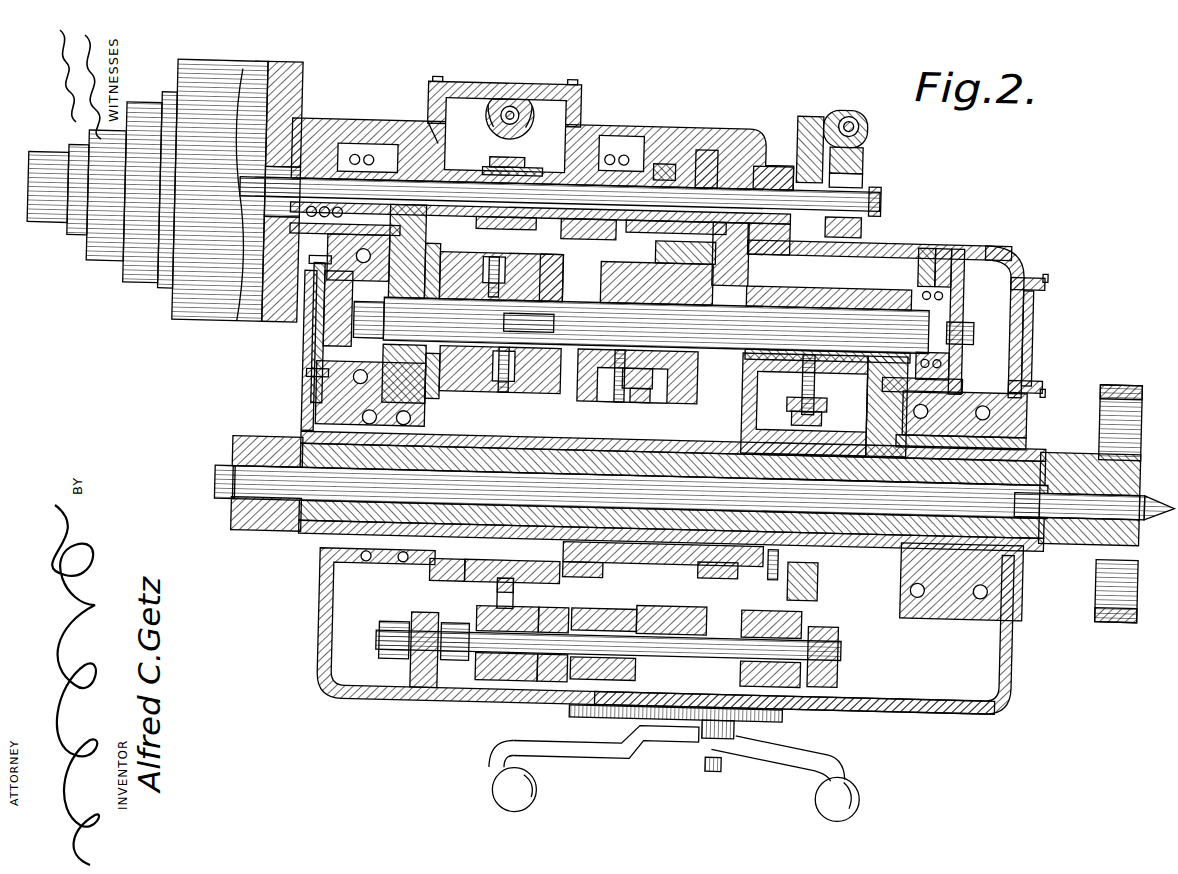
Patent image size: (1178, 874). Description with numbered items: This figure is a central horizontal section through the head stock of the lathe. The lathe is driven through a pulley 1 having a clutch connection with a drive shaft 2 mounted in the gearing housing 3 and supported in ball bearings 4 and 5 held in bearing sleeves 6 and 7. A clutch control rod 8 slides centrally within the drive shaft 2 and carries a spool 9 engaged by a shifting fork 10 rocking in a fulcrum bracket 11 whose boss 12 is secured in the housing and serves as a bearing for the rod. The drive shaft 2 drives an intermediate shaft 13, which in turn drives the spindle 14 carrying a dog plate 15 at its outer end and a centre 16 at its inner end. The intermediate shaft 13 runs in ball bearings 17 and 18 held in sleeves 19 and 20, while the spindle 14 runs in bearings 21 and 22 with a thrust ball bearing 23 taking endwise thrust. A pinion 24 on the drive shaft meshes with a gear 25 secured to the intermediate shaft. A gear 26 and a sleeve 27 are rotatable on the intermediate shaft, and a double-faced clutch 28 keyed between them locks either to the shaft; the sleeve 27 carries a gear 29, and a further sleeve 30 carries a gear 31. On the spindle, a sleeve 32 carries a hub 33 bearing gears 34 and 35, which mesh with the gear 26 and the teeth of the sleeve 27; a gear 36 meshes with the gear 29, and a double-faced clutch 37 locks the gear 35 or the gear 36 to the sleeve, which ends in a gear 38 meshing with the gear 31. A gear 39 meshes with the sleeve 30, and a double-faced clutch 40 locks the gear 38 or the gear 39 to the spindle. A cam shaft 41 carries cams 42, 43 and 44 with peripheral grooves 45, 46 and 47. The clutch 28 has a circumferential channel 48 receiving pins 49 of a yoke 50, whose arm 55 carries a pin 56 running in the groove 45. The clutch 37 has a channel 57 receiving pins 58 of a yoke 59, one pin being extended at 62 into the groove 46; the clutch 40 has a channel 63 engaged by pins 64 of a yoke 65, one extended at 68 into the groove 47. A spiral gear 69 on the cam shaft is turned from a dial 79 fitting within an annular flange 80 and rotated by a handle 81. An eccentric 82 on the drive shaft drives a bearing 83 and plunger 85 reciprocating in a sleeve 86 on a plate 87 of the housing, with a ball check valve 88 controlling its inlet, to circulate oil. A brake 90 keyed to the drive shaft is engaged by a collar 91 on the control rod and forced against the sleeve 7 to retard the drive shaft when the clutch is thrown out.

The pulley 1 is at (190, 335).
The drive shaft 2 is at (460, 190).
The gearing housing 3 is at (322, 642).
The ball bearing 4 is at (349, 160).
The ball bearing 5 is at (603, 155).
The bearing sleeve 6 is at (366, 160).
The bearing sleeve 7 is at (618, 155).
The clutch control rod 8 is at (876, 198).
The spool 9 is at (857, 226).
The shifting fork 10 is at (857, 150).
The fulcrum bracket 11 is at (792, 136).
The boss 12 is at (746, 178).
The intermediate shaft 13 is at (782, 300).
The spindle 14 is at (1025, 445).
The dog plate 15 is at (1118, 376).
The centre 16 is at (1152, 510).
The ball bearing 17 is at (320, 350).
The ball bearing 18 is at (920, 252).
The sleeve 19 is at (330, 390).
The sleeve 20 is at (950, 260).
The bearing 21 is at (292, 545).
The bearing 22 is at (1025, 600).
The thrust ball bearing 23 is at (432, 575).
The pinion 24 is at (435, 162).
The gear 25 is at (445, 255).
The gear 26 is at (480, 262).
The sleeve 27 is at (630, 290).
The double-faced clutch 28 is at (540, 262).
The gear 29 is at (672, 256).
The sleeve 30 is at (822, 300).
The gear 31 is at (744, 268).
The sleeve 32 is at (490, 587).
The hub 33 is at (470, 385).
The gear 34 is at (425, 420).
The gear 35 is at (520, 380).
The gear 36 is at (722, 572).
The double-faced clutch 37 is at (655, 565).
The gear 38 is at (770, 562).
The gear 39 is at (865, 408).
The double-faced clutch 40 is at (790, 410).
The cam shaft 41 is at (848, 648).
The cam 42 is at (430, 670).
The cam 43 is at (515, 690).
The cam 44 is at (845, 707).
The peripheral groove 45 is at (470, 690).
The peripheral groove 46 is at (590, 690).
The peripheral groove 47 is at (822, 685).
The circumferential channel 48 is at (455, 330).
The pins 49 is at (540, 330).
The yoke 50 is at (484, 280).
The arm 55 is at (500, 596).
The pin 56 is at (482, 620).
The circumferential channel 57 is at (649, 403).
The pins 58 is at (640, 375).
The yoke 59 is at (618, 380).
The extension of pin 62 is at (690, 608).
The circumferential channel 63 is at (815, 418).
The pins 64 is at (803, 388).
The yoke 65 is at (822, 572).
The extension of pin 68 is at (800, 614).
The spiral gear 69 is at (752, 670).
The dial 79 is at (630, 746).
The annular flange 80 is at (770, 742).
The handle 81 is at (828, 799).
The eccentric 82 is at (518, 160).
The bearing 83 is at (500, 163).
The plunger 85 is at (522, 124).
The sleeve 86 is at (478, 122).
The plate 87 is at (565, 88).
The ball check valve 88 is at (501, 104).
The brake 90 is at (655, 166).
The collar 91 is at (697, 152).